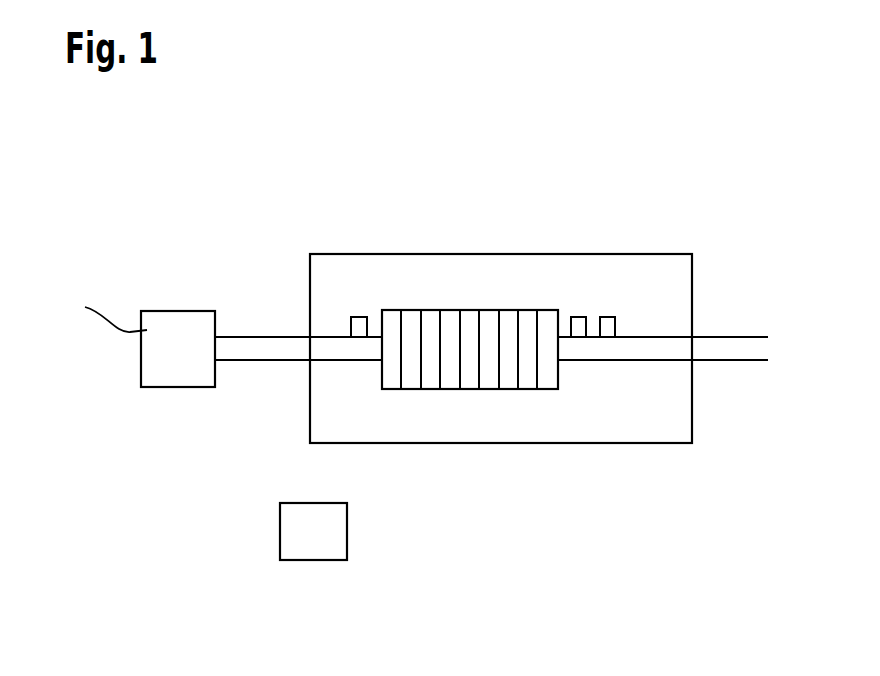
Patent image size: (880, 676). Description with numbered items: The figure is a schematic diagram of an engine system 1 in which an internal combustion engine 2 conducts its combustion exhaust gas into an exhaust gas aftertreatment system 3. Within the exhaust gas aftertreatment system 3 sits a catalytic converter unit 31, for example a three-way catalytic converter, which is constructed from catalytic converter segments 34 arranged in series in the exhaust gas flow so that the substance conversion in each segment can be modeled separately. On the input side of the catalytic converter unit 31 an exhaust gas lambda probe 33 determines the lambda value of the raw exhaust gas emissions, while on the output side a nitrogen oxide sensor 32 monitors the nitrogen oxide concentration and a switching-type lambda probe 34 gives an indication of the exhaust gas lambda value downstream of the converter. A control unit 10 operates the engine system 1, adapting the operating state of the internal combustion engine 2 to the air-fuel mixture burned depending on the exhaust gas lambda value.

The engine system 1 is at (704, 217).
The internal combustion engine 2 is at (180, 311).
The exhaust gas aftertreatment system 3 is at (393, 254).
The control unit 10 is at (312, 560).
The catalytic converter unit 31 is at (506, 308).
The nitrogen oxide sensor 32 is at (606, 317).
The exhaust gas lambda probe 33 is at (359, 317).
The catalytic converter segments 34 is at (411, 320).